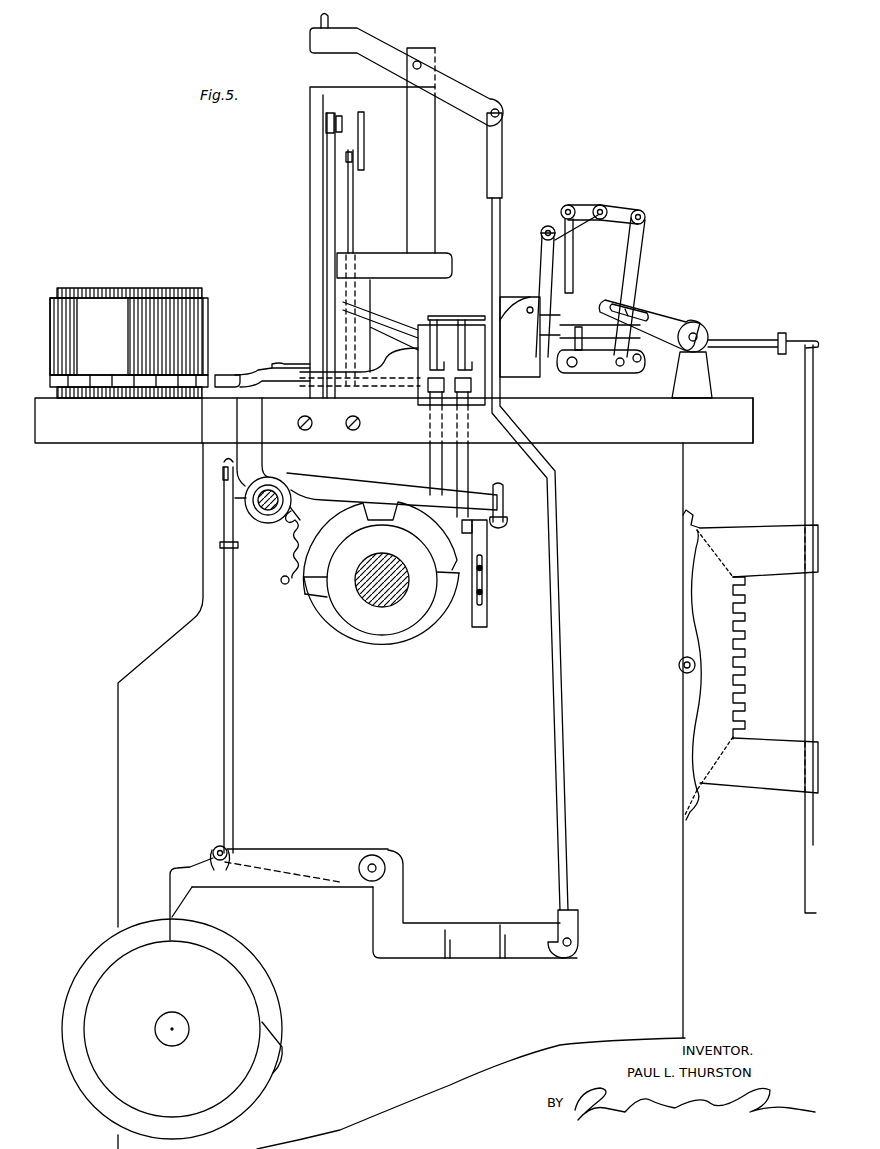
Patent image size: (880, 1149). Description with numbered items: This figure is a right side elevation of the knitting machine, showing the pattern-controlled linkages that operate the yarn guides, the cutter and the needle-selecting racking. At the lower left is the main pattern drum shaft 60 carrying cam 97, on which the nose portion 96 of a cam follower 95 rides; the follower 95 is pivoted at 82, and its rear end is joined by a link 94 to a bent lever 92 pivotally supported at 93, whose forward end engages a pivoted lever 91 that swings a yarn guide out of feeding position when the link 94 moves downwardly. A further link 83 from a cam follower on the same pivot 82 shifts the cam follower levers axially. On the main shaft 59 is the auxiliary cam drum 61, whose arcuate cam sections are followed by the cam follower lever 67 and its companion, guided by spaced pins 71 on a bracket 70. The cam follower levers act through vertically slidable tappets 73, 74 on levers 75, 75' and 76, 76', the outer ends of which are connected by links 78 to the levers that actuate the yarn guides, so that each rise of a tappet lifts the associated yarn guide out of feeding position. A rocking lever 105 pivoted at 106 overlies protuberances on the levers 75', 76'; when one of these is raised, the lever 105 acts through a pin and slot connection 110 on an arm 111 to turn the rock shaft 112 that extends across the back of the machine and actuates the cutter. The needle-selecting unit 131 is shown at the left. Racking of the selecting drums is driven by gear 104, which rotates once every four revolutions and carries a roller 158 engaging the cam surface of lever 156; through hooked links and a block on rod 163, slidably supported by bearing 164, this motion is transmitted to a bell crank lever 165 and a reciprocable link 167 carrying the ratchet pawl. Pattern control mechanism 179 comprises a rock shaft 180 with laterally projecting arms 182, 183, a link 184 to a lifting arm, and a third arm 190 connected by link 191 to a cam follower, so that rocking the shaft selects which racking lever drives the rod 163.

The pivoted lever 91 is at (320, 19).
The bent lever 92 is at (460, 105).
The pivotal support of bent lever 93 is at (424, 69).
The links 78 is at (354, 201).
The link 94 is at (492, 214).
The third arm 190 is at (578, 194).
The pattern control mechanism 179 is at (603, 204).
The rock shaft 180 is at (610, 207).
The laterally projecting arm 182 is at (645, 214).
The laterally projecting arm 183 is at (548, 226).
The link 184 is at (640, 248).
The link 191 is at (560, 245).
The pivotal support of rocking lever 106 is at (524, 300).
The rocking lever 105 is at (601, 337).
The pin and slot connection 110 is at (636, 310).
The arm 111 is at (665, 320).
The rock shaft 112 is at (700, 335).
The needle-selecting unit 131 is at (140, 290).
The reciprocable link 167 is at (222, 375).
The bell crank lever 165 is at (260, 370).
The lever 75 is at (380, 316).
The lever 75' is at (451, 348).
The lever 76 is at (360, 320).
The lever 76' is at (472, 331).
The rod 163 is at (382, 392).
The bearing 164 is at (512, 400).
The tappet 73 is at (430, 472).
The tappet 74 is at (468, 478).
The cam follower lever 67 is at (350, 490).
The pins 71 is at (503, 503).
The bracket 70 is at (500, 528).
The main shaft 59 is at (370, 597).
The auxiliary cam drum 61 is at (397, 637).
The link 83 is at (224, 680).
The gear 104 is at (688, 512).
The lever 156 is at (733, 528).
The roller 158 is at (683, 675).
The pivot 82 is at (376, 862).
The nose portion 96 is at (184, 897).
The cam follower 95 is at (470, 935).
The main pattern drum shaft 60 is at (190, 1030).
The cam 97 is at (276, 1070).